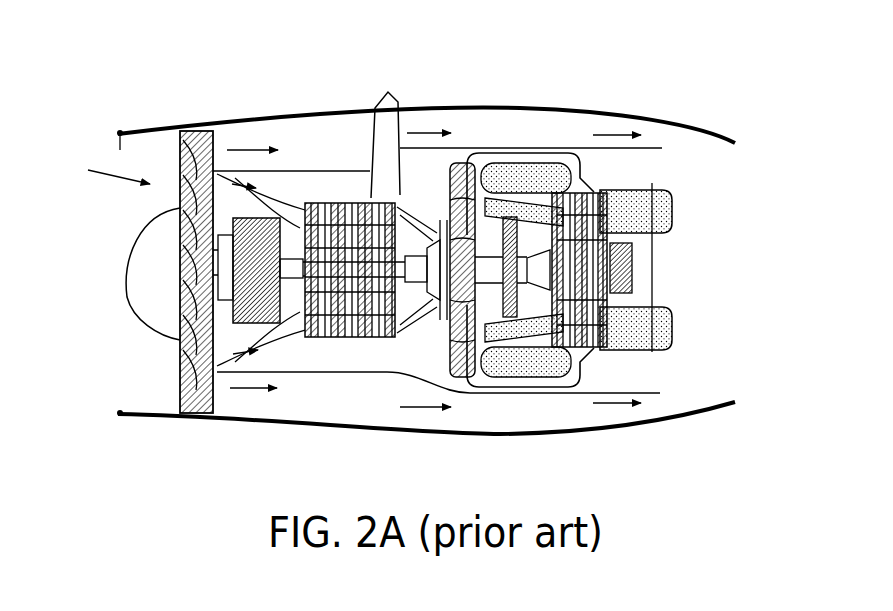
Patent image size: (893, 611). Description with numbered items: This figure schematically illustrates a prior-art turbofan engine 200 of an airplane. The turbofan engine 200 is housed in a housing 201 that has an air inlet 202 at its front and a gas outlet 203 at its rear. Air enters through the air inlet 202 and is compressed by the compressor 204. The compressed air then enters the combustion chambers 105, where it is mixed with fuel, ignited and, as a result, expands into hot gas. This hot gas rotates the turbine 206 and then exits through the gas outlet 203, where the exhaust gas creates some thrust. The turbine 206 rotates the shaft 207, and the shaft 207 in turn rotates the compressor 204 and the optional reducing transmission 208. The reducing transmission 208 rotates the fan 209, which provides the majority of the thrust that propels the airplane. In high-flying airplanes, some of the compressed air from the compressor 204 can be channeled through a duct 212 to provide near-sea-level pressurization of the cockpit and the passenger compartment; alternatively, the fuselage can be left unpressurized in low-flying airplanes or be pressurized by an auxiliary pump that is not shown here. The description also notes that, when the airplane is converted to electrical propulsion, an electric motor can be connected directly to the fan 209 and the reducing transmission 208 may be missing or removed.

The turbofan engine 200 is at (724, 84).
The housing 201 is at (580, 112).
The air inlet 202 is at (140, 413).
The gas outlet 203 is at (698, 412).
The compressor 204 is at (405, 190).
The combustor 105 is at (527, 168).
The turbine 206 is at (597, 185).
The shaft 207 is at (278, 398).
The reducing transmission 208 is at (130, 294).
The fan 209 is at (97, 166).
The duct 212 is at (372, 140).